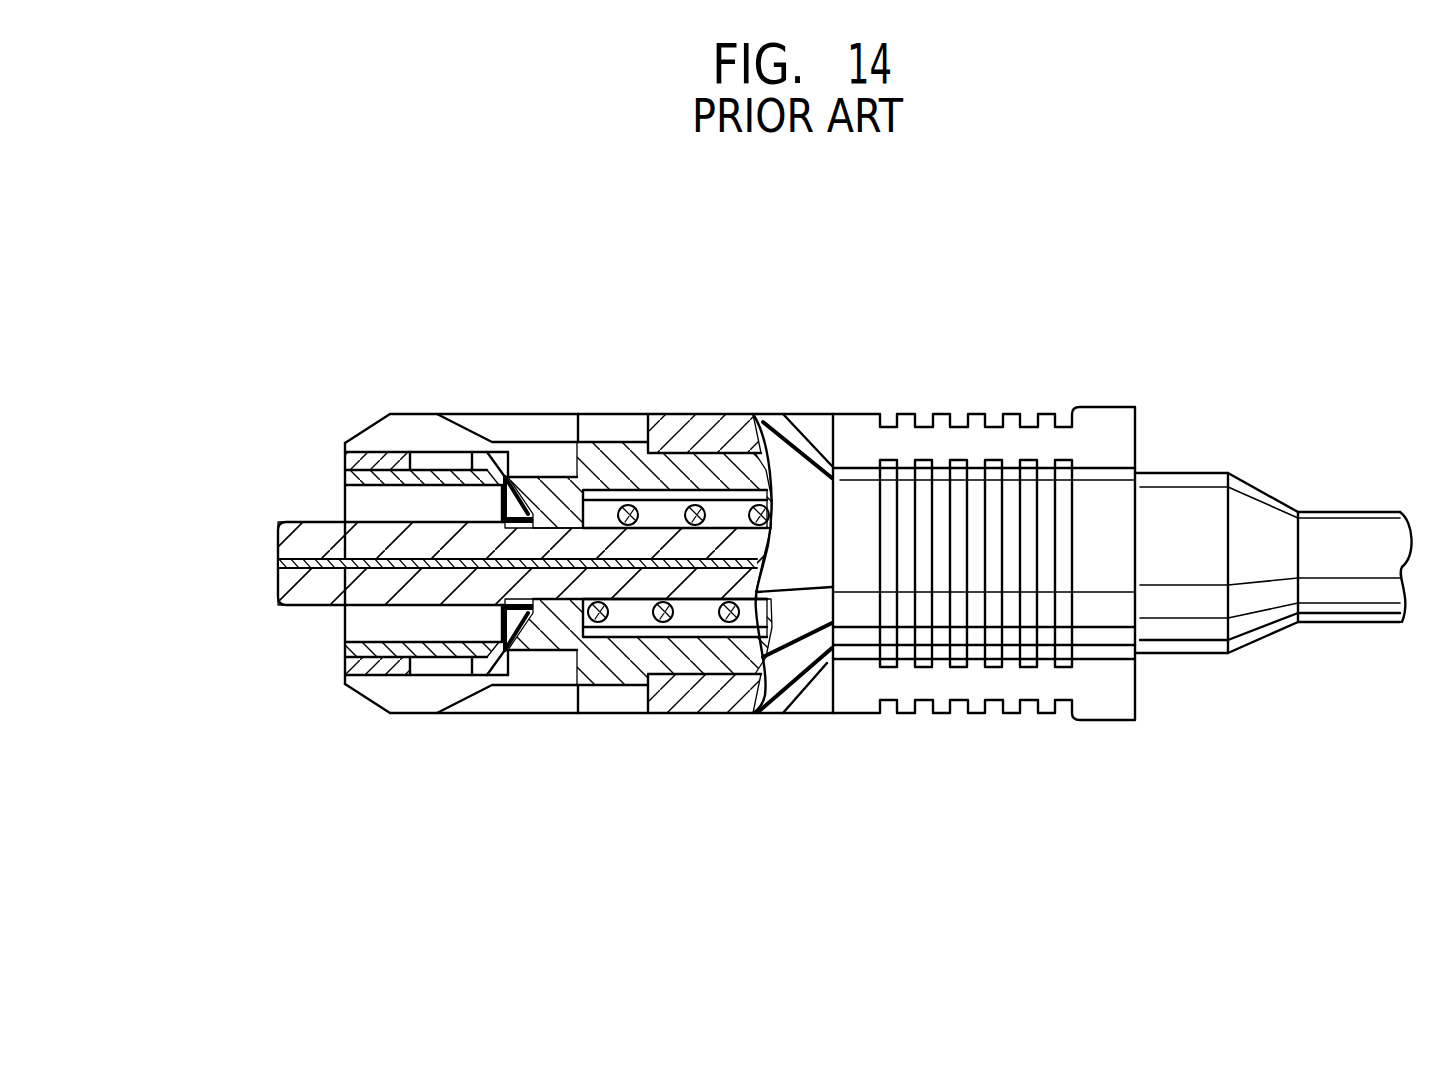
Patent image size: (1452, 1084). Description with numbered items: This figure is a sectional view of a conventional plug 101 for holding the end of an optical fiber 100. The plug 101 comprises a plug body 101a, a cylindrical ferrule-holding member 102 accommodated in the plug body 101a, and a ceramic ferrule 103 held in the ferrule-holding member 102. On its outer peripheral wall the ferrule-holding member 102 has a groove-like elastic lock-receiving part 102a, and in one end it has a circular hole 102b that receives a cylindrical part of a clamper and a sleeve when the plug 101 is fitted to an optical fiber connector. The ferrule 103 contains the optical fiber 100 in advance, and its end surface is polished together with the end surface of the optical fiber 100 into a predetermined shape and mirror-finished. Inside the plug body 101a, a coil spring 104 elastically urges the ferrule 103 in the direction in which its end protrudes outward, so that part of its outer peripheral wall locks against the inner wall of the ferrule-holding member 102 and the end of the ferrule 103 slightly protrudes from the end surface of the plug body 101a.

The optical fiber 100 is at (275, 563).
The plug 101 is at (698, 402).
The plug body 101a is at (810, 412).
The ferrule-holding member 102 is at (618, 686).
The elastic lock-receiving part 102a is at (518, 468).
The circular hole 102b is at (352, 510).
The ferrule 103 is at (335, 607).
The coil spring 104 is at (672, 615).